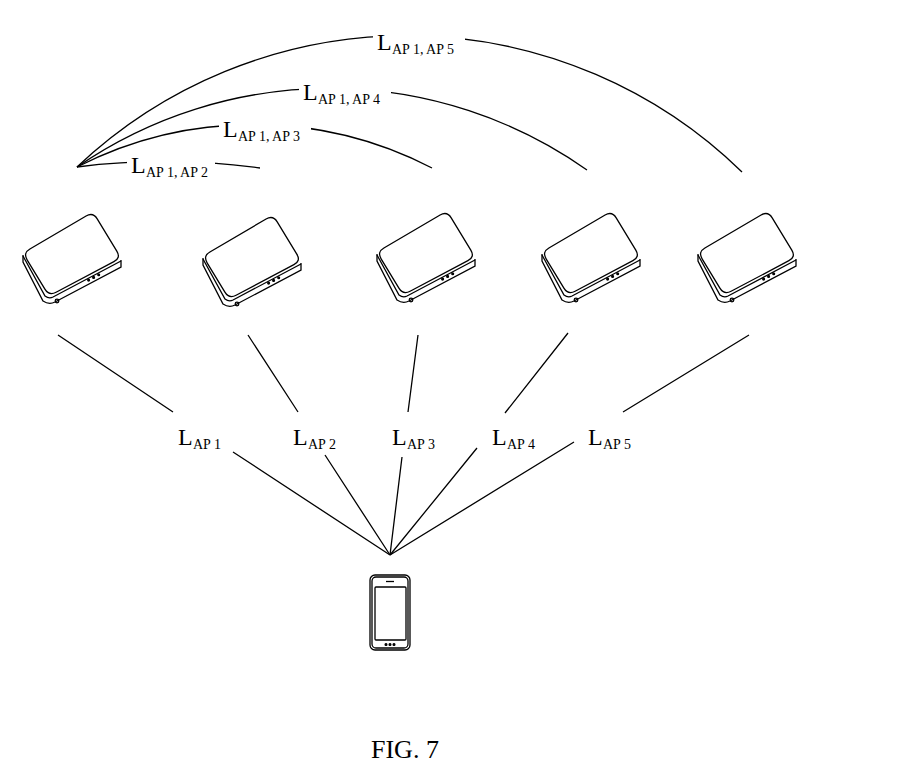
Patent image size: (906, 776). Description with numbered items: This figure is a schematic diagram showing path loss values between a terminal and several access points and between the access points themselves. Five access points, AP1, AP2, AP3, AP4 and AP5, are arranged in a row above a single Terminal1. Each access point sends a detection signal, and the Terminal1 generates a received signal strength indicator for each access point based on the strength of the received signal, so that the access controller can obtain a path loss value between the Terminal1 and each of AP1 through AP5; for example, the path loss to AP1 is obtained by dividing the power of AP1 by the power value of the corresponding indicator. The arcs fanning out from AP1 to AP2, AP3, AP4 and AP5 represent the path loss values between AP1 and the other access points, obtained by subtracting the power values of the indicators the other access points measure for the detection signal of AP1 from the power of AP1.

The access point AP1 is at (72, 240).
The access point AP2 is at (252, 242).
The access point AP3 is at (426, 240).
The access point AP4 is at (591, 240).
The access point AP5 is at (747, 240).
The terminal Terminal1 is at (393, 632).